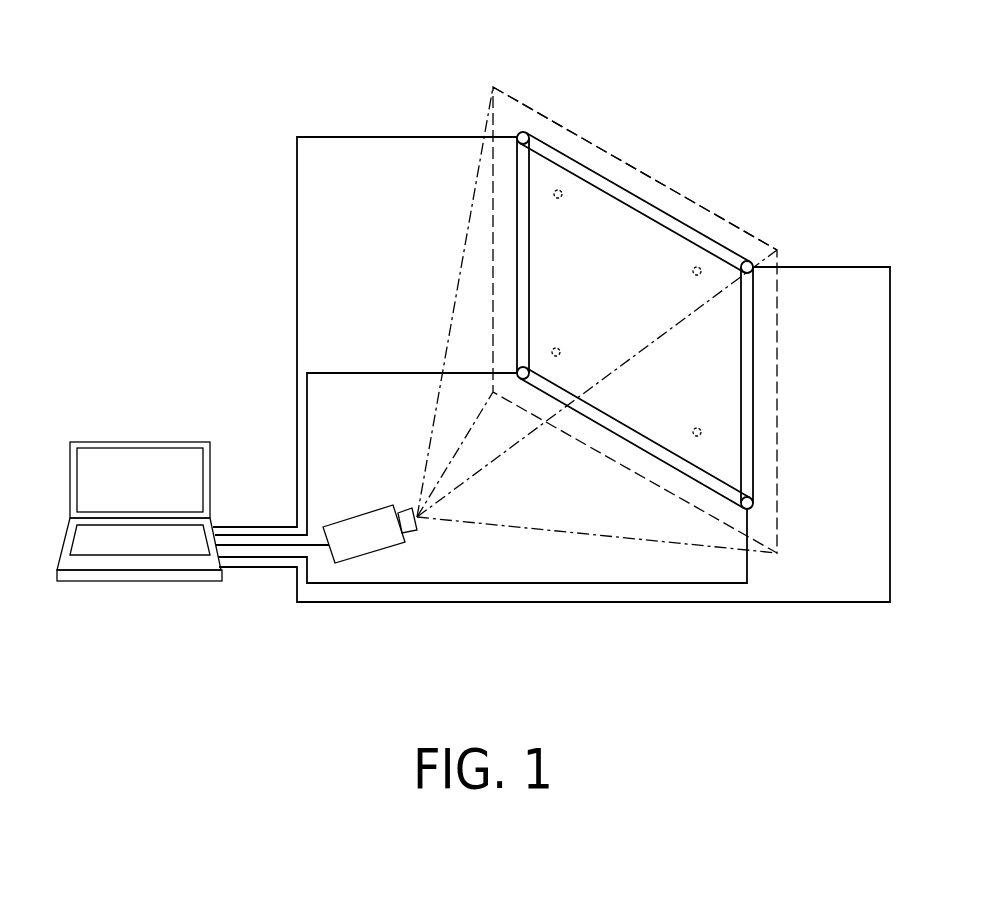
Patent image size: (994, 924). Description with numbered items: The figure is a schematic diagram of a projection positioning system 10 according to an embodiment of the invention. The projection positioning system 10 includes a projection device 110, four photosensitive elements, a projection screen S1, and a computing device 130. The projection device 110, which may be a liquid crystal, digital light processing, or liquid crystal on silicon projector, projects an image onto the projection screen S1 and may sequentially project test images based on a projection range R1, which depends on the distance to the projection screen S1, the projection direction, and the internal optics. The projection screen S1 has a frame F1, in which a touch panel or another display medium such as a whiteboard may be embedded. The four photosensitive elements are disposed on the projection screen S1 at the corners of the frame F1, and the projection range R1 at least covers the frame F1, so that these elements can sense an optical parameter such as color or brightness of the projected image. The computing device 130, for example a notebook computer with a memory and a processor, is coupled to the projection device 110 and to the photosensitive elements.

The projection positioning system 10 is at (812, 713).
The projection device 110 is at (363, 513).
The computing device 130 is at (135, 583).
The projection range R1 is at (660, 179).
The projection screen S1 is at (756, 318).
The frame F1 is at (746, 428).